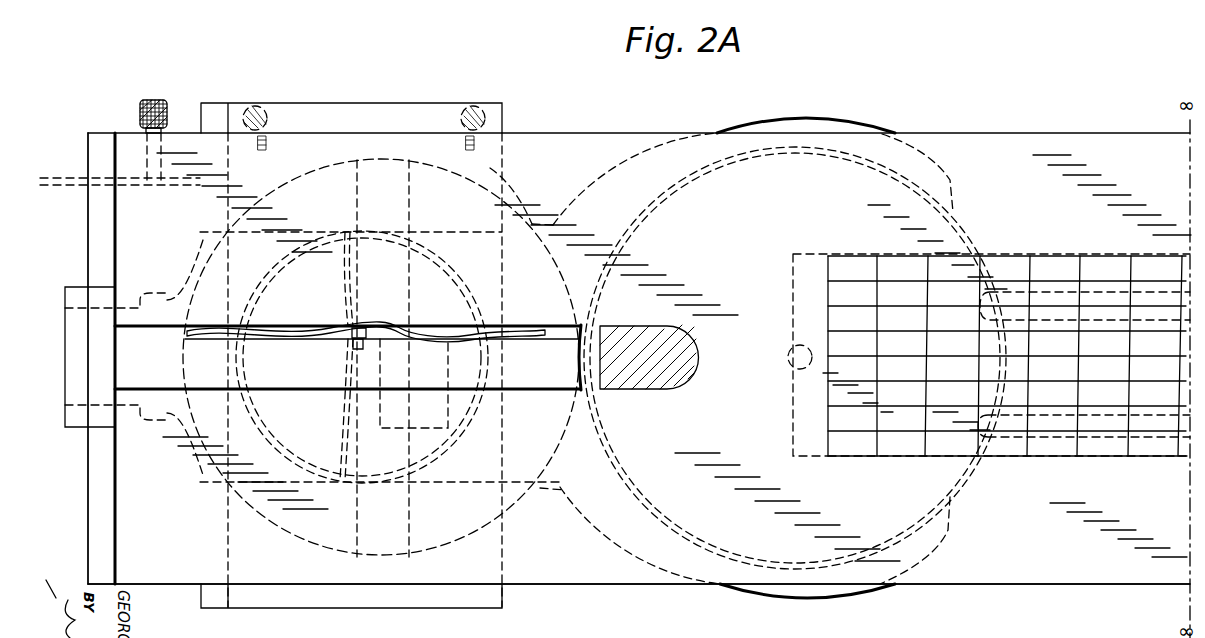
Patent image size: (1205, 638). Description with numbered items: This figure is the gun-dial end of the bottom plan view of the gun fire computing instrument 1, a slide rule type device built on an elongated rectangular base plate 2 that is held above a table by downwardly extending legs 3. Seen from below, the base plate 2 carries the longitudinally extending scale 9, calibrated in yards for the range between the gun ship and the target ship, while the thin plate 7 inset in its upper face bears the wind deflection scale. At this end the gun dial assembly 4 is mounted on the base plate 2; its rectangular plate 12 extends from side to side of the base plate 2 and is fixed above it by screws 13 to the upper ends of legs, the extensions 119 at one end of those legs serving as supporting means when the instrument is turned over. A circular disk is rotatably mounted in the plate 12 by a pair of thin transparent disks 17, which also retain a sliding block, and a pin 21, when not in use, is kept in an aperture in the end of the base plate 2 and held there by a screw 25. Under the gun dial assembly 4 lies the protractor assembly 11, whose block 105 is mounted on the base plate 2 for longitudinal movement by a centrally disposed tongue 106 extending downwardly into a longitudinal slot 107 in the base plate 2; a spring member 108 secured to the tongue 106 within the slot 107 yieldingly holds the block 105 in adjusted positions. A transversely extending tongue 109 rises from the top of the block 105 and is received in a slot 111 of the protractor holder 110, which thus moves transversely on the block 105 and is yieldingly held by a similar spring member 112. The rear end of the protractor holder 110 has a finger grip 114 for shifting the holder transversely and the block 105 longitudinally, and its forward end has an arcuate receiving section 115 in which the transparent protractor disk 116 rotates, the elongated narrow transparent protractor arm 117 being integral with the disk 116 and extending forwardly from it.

The gun fire computing instrument 1 is at (1061, 121).
The base plate 2 is at (166, 590).
The legs 3 is at (87, 240).
The gun dial assembly 4 is at (370, 123).
The thin plate 7 is at (793, 428).
The longitudinally extending scale 9 is at (1159, 461).
The protractor assembly 11 is at (617, 181).
The rectangular plate 12 is at (505, 170).
The screws 13 is at (488, 118).
The thin transparent disks 17 is at (457, 440).
The pin 21 is at (52, 188).
The screw 25 is at (139, 108).
The block 105 is at (262, 195).
The tongue 106 is at (347, 374).
The slot 107 is at (648, 326).
The spring member 108 is at (283, 327).
The transversely extending tongue 109 is at (356, 203).
The protractor holder 110 is at (540, 224).
The slot 111 is at (410, 200).
The spring member 112 is at (345, 408).
The finger grip 114 is at (68, 405).
The arcuate receiving section 115 is at (722, 170).
The transparent protractor disk 116 is at (975, 228).
The transparent protractor arm 117 is at (1092, 432).
The extensions 119 is at (240, 130).